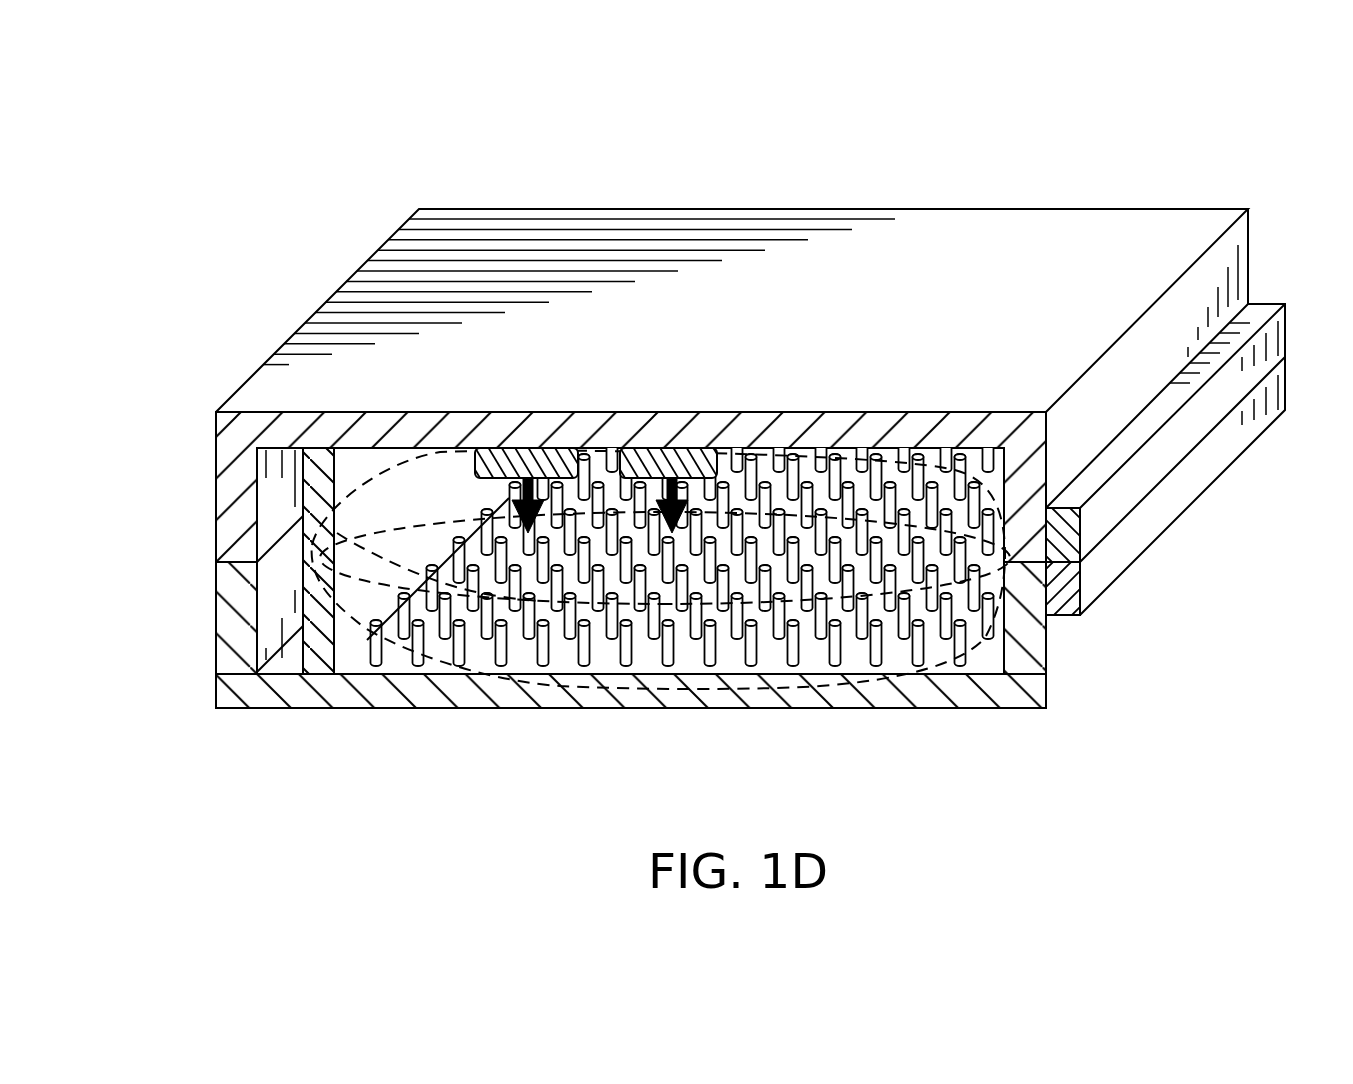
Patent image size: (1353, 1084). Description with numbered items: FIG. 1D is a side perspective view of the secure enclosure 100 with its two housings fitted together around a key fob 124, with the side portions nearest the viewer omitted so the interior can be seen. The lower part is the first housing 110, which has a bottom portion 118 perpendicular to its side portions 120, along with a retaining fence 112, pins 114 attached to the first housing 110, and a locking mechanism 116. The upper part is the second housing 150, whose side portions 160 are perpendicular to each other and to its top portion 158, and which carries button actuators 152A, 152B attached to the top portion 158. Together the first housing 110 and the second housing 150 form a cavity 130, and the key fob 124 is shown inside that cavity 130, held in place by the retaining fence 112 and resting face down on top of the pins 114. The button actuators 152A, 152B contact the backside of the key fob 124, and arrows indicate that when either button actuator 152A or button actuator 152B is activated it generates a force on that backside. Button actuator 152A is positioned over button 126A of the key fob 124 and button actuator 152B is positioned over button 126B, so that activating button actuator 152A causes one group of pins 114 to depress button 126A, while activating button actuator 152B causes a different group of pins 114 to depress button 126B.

The secure enclosure 100 is at (232, 176).
The first housing 110 is at (233, 720).
The retaining fence 112 is at (303, 537).
The pins 114 is at (473, 640).
The locking mechanism 116 is at (1144, 474).
The bottom portion 118 is at (362, 648).
The side portions 120 is at (262, 624).
The key fob 124 is at (810, 682).
The button 126A is at (522, 640).
The button 126B is at (698, 636).
The cavity 130 is at (275, 584).
The second housing 150 is at (1188, 204).
The button actuator 152A is at (528, 448).
The button actuator 152B is at (690, 450).
The top portion 158 is at (425, 470).
The side portions 160 is at (258, 505).